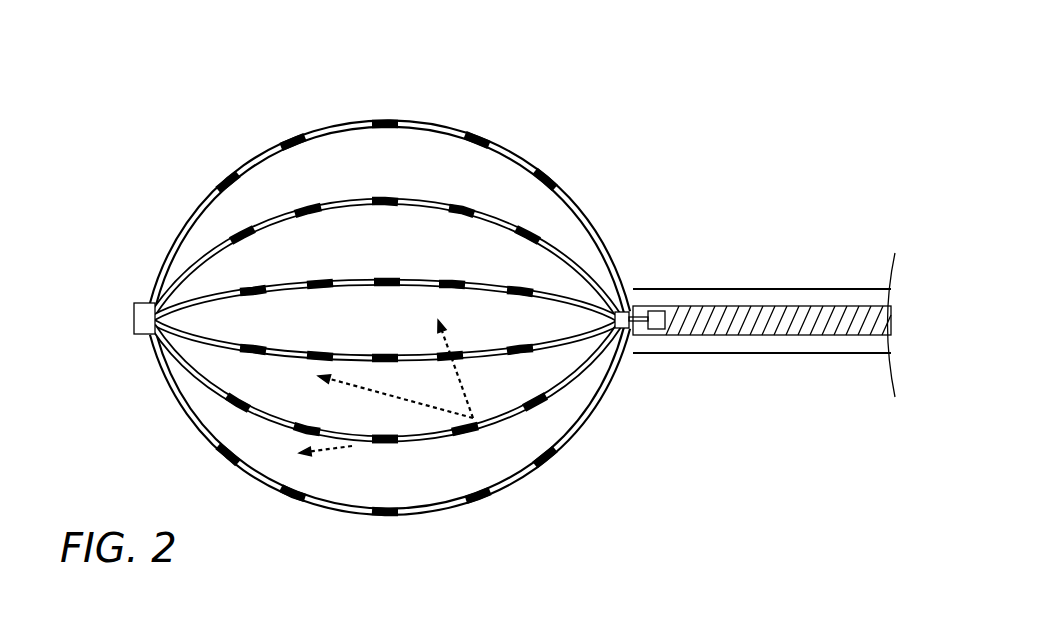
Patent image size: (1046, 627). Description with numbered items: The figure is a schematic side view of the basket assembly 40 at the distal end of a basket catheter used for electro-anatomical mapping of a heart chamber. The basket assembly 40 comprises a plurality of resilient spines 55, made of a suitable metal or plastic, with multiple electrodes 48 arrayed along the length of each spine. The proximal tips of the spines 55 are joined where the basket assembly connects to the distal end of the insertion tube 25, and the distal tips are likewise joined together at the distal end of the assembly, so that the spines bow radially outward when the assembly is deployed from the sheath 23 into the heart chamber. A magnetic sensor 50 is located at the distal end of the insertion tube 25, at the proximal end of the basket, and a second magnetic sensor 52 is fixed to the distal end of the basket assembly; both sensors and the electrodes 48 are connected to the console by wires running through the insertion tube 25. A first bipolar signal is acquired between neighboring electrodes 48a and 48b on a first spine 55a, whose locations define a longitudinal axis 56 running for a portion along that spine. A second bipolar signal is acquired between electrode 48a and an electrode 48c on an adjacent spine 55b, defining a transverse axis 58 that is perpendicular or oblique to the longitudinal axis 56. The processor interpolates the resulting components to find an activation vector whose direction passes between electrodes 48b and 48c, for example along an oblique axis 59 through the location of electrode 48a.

The basket assembly 40 is at (193, 84).
The electrodes 48 is at (387, 123).
The electrode 48a is at (467, 432).
The electrode 48b is at (377, 437).
The electrode 48c is at (460, 345).
The spines 55 is at (563, 248).
The first spine 55a is at (197, 372).
The second spine 55b is at (238, 342).
The second magnetic sensor 52 is at (143, 303).
The magnetic sensor 50 is at (645, 311).
The sheath 23 is at (778, 354).
The insertion tube 25 is at (777, 305).
The longitudinal axis 56 is at (353, 447).
The transverse axis 58 is at (465, 393).
The oblique axis 59 is at (349, 377).